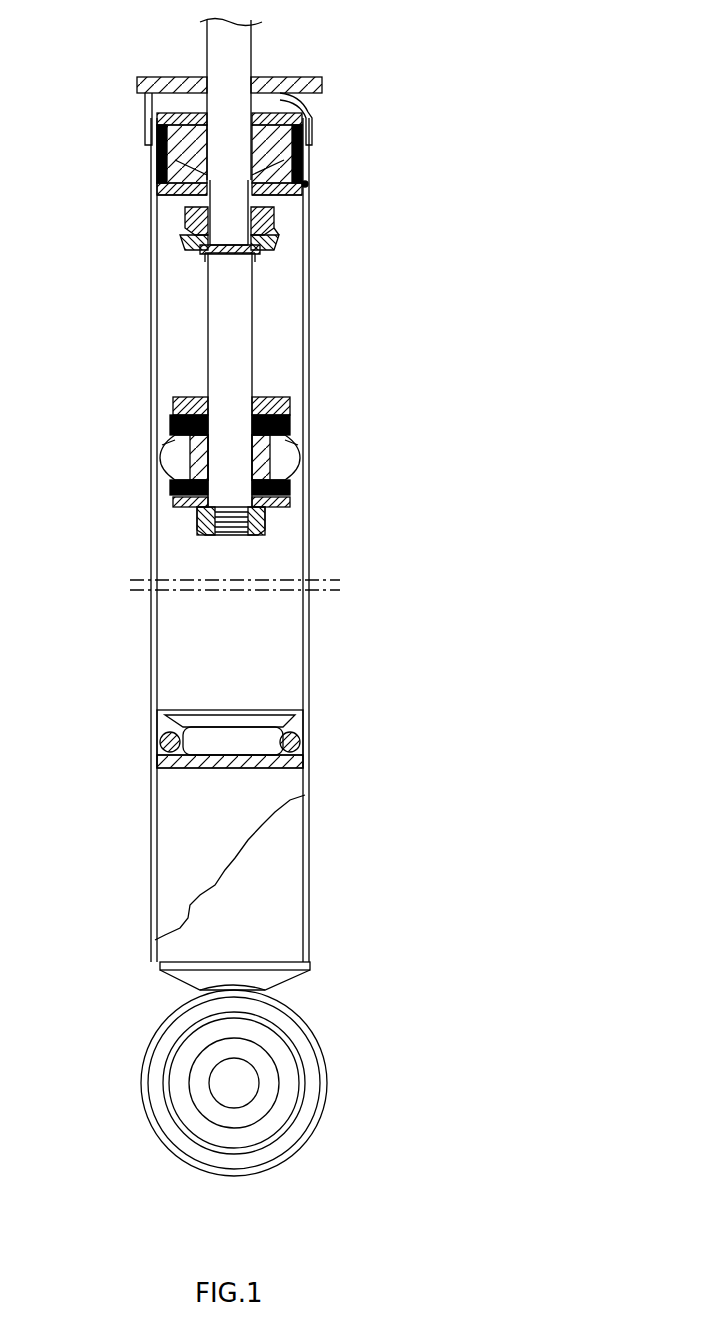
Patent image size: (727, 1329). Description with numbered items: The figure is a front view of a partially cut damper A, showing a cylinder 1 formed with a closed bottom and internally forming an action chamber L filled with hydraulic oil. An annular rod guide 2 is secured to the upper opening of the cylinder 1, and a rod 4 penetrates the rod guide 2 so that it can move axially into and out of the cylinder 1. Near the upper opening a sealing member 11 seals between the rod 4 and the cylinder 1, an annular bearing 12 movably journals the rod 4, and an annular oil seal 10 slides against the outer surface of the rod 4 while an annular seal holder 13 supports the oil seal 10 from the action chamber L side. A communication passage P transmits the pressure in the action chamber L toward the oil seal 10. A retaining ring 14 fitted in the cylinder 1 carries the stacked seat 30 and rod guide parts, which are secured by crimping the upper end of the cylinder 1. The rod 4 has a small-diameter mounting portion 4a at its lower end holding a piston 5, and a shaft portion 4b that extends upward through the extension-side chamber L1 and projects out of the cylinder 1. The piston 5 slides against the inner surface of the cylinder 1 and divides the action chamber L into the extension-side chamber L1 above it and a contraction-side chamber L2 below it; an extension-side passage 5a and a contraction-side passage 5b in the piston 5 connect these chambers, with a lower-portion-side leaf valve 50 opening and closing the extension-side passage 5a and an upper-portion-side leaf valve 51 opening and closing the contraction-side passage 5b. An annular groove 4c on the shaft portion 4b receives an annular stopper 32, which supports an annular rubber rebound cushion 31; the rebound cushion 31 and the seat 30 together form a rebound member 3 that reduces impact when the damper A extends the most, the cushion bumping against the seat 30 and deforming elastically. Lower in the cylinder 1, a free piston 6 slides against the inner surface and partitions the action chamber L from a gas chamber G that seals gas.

The cylinder 1 is at (312, 648).
The rod guide 2 is at (165, 152).
The rebound member 3 is at (162, 244).
The rod 4 is at (203, 42).
The mounting portion 4a is at (228, 500).
The shaft portion 4b is at (240, 313).
The annular groove 4c is at (228, 255).
The piston 5 is at (231, 449).
The extension-side passage 5a is at (182, 442).
The contraction-side passage 5b is at (298, 462).
The free piston 6 is at (163, 730).
The oil seal 10 is at (312, 156).
The sealing member 11 is at (190, 105).
The bearing 12 is at (306, 122).
The seal holder 13 is at (160, 183).
The retaining ring 14 is at (300, 196).
The seat 30 is at (180, 218).
The rebound cushion 31 is at (165, 250).
The annular stopper 32 is at (280, 245).
The lower-portion-side leaf valve 50 is at (185, 497).
The upper-portion-side leaf valve 51 is at (285, 412).
The damper A is at (358, 70).
The communication passage P is at (312, 184).
The action chamber L is at (278, 378).
The extension-side chamber L1 is at (172, 366).
The contraction-side chamber L2 is at (252, 646).
The gas chamber G is at (240, 834).